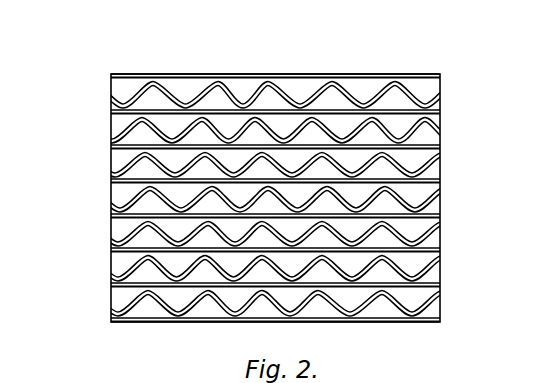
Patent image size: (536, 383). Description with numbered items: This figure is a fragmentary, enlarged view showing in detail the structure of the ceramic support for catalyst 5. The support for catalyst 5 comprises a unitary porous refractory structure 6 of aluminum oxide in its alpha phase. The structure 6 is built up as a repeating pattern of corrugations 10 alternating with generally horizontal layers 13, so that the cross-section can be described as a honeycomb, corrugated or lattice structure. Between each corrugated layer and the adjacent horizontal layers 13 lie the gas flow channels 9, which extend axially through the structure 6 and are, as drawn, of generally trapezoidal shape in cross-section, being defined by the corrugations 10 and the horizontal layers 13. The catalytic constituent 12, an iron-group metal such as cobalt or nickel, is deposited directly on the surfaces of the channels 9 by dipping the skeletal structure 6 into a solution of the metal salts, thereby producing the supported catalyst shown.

The support for catalyst 5 is at (424, 69).
The unitary porous refractory structure 6 is at (327, 78).
The gas flow channels 9 is at (185, 93).
The corrugations 10 is at (265, 286).
The catalytic constituent 12 is at (281, 148).
The generally horizontal layers 13 is at (266, 217).